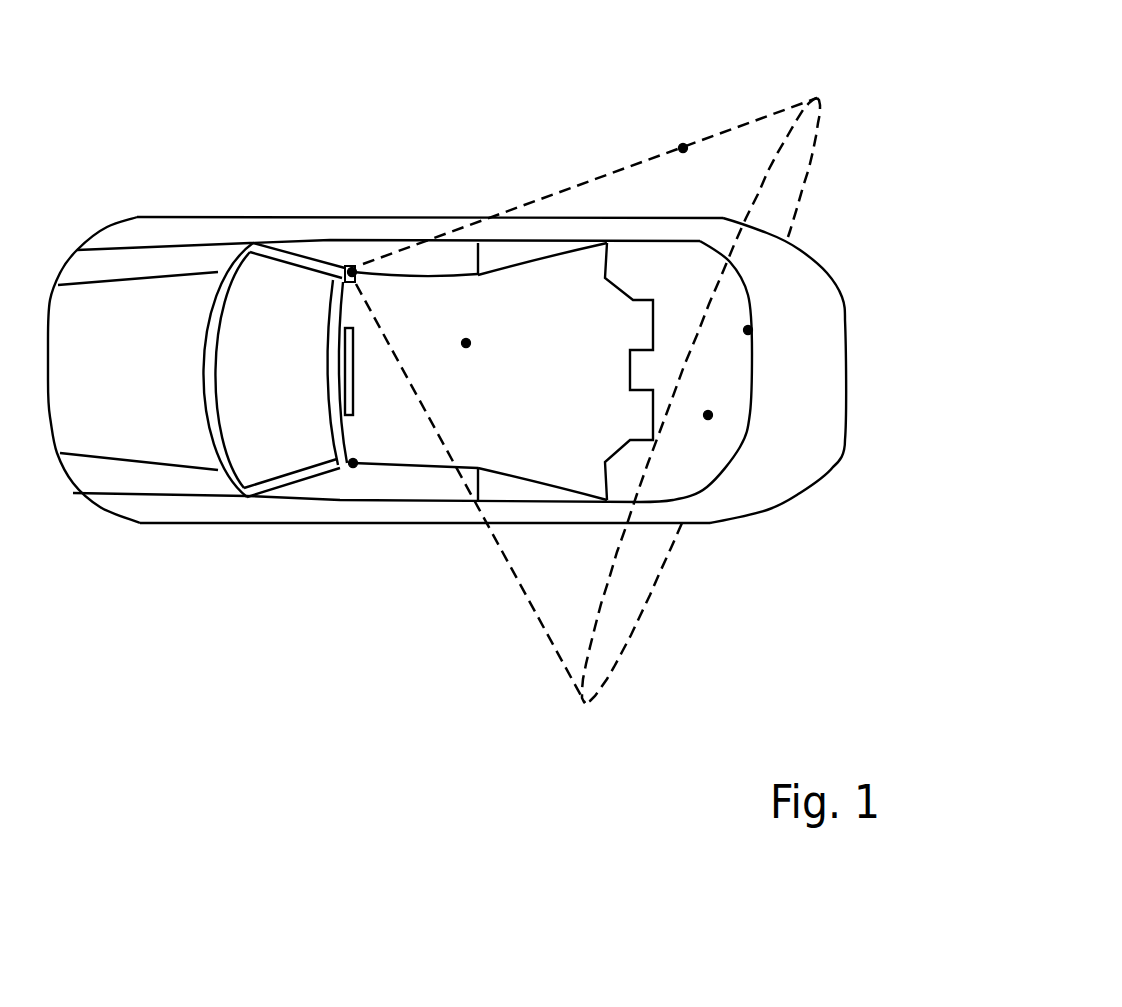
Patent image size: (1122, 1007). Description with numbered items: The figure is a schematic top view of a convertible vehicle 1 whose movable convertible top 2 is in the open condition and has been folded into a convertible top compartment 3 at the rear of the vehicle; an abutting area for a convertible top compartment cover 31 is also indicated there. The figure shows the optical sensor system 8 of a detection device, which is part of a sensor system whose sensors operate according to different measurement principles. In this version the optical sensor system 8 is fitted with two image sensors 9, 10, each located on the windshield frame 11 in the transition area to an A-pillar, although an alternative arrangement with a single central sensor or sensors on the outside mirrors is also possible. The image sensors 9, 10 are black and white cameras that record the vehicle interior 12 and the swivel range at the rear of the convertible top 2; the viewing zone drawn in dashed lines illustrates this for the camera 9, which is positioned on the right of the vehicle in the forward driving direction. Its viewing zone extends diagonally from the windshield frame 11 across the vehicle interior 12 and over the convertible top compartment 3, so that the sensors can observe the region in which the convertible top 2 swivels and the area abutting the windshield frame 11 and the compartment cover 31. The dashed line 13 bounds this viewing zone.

The convertible vehicle 1 is at (157, 246).
The movable convertible top 2 is at (708, 415).
The convertible top compartment 3 is at (762, 377).
The convertible top compartment cover 31 is at (748, 330).
The optical sensor system 8 is at (553, 188).
The image sensor 9 is at (353, 267).
The image sensor 10 is at (354, 464).
The windshield frame 11 is at (322, 386).
The vehicle interior 12 is at (466, 343).
The boundary line of detection region 13 is at (680, 145).